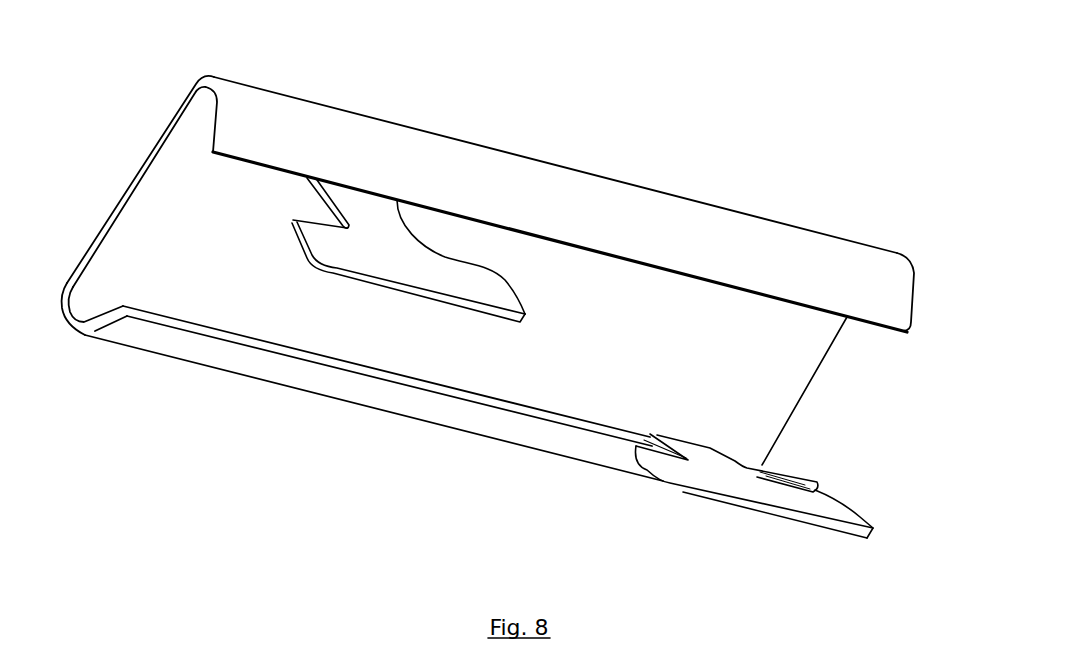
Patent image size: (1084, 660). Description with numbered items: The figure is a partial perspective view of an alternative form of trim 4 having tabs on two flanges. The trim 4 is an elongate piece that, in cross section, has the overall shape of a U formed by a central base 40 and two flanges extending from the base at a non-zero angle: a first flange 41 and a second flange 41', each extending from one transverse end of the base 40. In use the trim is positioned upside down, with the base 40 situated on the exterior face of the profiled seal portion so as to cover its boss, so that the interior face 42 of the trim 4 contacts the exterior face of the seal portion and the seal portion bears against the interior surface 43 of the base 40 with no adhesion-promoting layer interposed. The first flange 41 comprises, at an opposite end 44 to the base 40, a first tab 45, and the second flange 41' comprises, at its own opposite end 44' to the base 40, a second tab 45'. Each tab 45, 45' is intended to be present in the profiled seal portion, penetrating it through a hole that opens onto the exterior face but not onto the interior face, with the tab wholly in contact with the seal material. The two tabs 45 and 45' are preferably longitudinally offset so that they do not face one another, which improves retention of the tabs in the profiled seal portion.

The trim 4 is at (164, 55).
The base 40 is at (153, 193).
The first flange 41 is at (560, 188).
The second flange 41' is at (374, 406).
The interior face 42 is at (628, 182).
The interior surface 43 is at (826, 348).
The opposite end 44 is at (928, 330).
The opposite end 44' is at (93, 265).
The first tab 45 is at (408, 183).
The second tab 45' is at (754, 501).